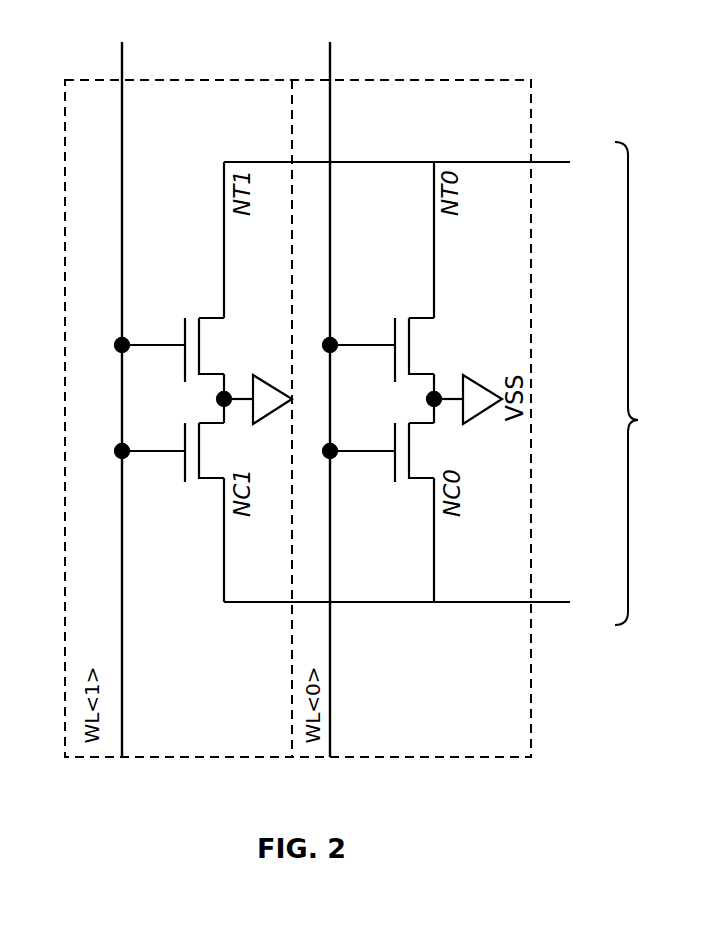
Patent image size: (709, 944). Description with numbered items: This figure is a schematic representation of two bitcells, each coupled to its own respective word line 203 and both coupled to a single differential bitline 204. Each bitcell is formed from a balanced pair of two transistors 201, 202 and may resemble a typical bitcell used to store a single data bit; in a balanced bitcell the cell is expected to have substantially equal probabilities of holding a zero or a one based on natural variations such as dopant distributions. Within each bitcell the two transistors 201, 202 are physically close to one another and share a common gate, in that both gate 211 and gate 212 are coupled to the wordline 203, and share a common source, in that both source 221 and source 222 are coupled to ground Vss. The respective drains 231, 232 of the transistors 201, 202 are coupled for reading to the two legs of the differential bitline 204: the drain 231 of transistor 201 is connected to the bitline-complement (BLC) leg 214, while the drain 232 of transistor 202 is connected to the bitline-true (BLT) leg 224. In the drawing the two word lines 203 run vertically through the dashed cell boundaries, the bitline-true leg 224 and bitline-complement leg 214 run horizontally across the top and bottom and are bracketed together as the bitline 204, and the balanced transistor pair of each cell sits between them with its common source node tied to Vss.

The transistor 201 is at (210, 482).
The transistor 202 is at (208, 317).
The word line 203 is at (122, 57).
The bitline 204 is at (655, 383).
The gate 211 is at (183, 465).
The gate 212 is at (184, 356).
The bitline-complement (BLC) leg 214 is at (548, 603).
The source 221 is at (212, 428).
The source 222 is at (214, 372).
The bitline-true (BLT) leg 224 is at (548, 161).
The drain 231 is at (223, 582).
The drain 232 is at (224, 182).